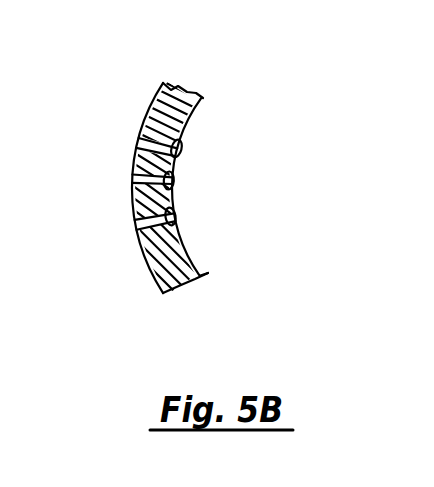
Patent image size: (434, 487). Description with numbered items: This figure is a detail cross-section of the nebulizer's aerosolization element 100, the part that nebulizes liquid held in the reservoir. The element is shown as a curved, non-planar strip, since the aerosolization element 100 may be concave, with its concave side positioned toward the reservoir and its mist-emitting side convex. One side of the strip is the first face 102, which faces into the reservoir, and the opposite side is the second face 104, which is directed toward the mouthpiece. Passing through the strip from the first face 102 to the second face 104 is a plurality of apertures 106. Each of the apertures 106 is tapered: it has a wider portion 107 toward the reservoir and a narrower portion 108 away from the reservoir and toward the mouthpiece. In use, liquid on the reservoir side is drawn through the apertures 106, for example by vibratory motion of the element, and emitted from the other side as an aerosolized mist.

The aerosolization element 100 is at (161, 188).
The first face 102 is at (183, 242).
The second face 104 is at (147, 260).
The apertures 106 is at (130, 142).
The wider portion 107 is at (181, 148).
The narrower portion 108 is at (140, 133).